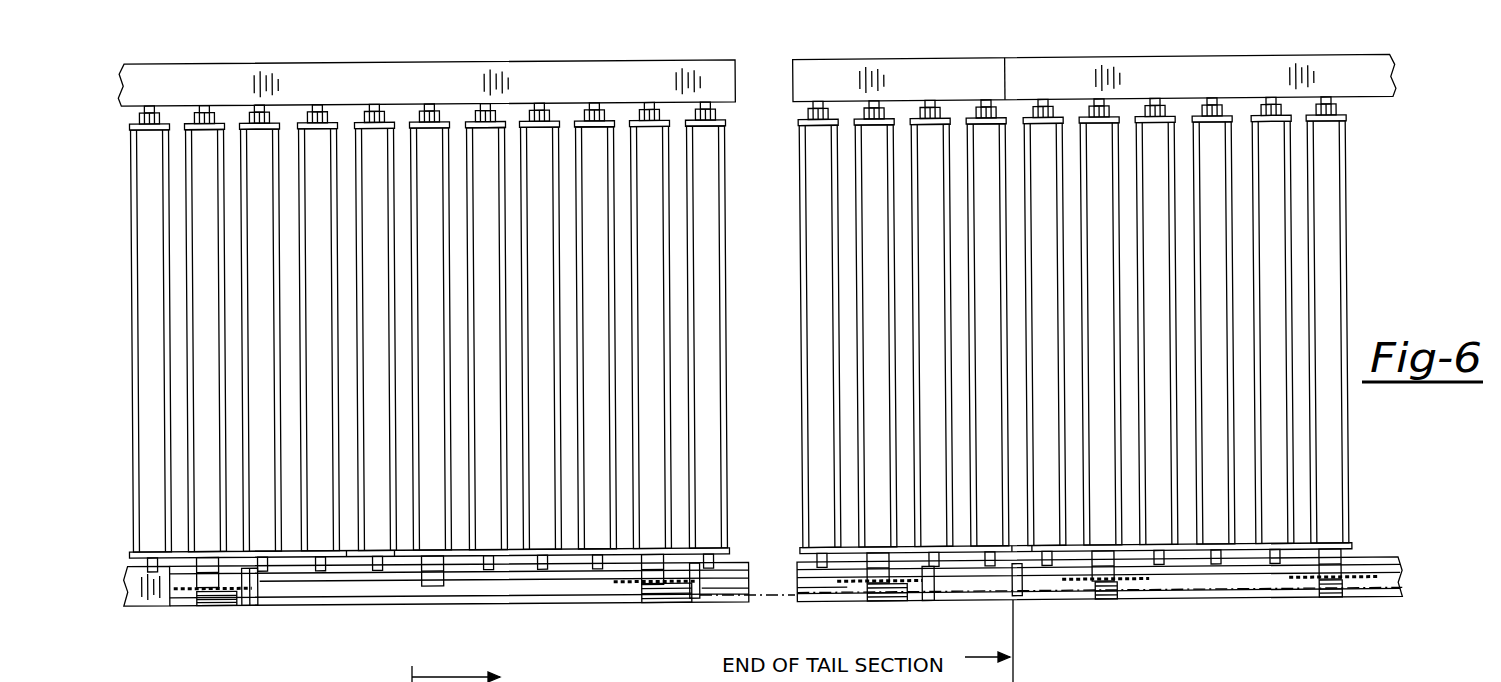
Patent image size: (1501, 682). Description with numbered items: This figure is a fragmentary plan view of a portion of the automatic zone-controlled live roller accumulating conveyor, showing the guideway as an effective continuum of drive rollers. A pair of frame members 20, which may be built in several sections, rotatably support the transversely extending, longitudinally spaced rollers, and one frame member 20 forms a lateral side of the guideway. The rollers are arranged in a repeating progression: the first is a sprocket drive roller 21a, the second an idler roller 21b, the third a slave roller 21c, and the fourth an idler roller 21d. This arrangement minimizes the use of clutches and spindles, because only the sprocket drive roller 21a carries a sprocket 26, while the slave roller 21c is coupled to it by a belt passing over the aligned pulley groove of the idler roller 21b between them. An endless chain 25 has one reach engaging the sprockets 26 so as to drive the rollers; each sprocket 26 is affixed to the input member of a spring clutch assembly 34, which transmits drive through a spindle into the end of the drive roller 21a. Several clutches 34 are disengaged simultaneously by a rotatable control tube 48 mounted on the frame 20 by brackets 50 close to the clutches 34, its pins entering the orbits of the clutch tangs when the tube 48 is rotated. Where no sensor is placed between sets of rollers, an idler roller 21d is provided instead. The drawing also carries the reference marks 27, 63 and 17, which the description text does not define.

The sprocket drive roller 21a is at (1332, 127).
The idler roller 21b is at (1277, 127).
The slave roller 21c is at (1218, 127).
The idler roller 21d is at (1161, 127).
The end roller 27 is at (713, 152).
The frame member 20 is at (1376, 556).
The endless chain 25 is at (1400, 576).
The sprocket 26 is at (1302, 579).
The spring clutch assembly 34 is at (1341, 596).
The bracket 50 is at (927, 601).
The roller support bar 63 is at (1326, 543).
The control tube 48 is at (701, 601).
The section line 17 is at (478, 670).